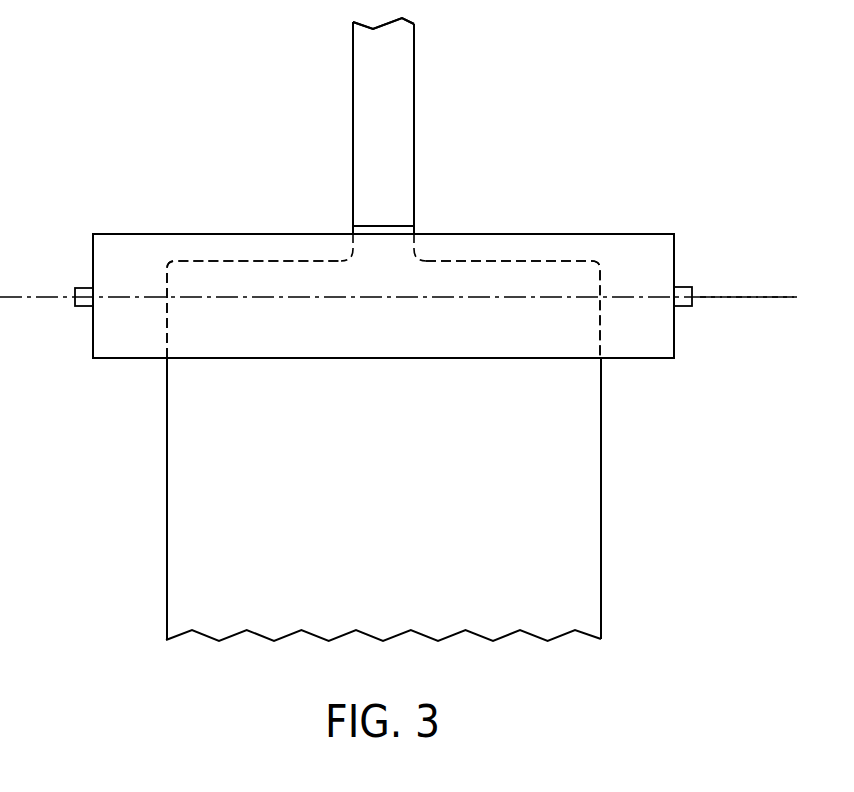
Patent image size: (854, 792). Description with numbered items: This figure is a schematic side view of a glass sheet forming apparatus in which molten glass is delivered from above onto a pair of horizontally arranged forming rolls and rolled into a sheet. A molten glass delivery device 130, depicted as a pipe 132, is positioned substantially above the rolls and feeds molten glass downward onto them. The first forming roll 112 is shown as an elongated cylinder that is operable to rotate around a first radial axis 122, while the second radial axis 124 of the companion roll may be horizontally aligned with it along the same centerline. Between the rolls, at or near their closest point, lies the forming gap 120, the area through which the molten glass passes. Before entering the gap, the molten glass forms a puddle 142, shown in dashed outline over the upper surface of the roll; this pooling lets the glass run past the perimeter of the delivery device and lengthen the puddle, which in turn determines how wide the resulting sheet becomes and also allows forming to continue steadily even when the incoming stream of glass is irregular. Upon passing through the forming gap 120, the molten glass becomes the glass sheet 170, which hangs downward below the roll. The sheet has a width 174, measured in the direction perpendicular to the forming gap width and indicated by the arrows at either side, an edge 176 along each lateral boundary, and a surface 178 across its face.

The first forming roll 112 is at (113, 234).
The forming gap 120 is at (532, 296).
The first radial axis 122 is at (722, 297).
The second radial axis 124 is at (750, 298).
The molten glass delivery device 130 is at (414, 148).
The pipe 132 is at (353, 60).
The puddle 142 is at (233, 260).
The glass sheet 170 is at (167, 342).
The width 174 is at (166, 480).
The edge 176 is at (166, 548).
The surface 178 is at (403, 521).